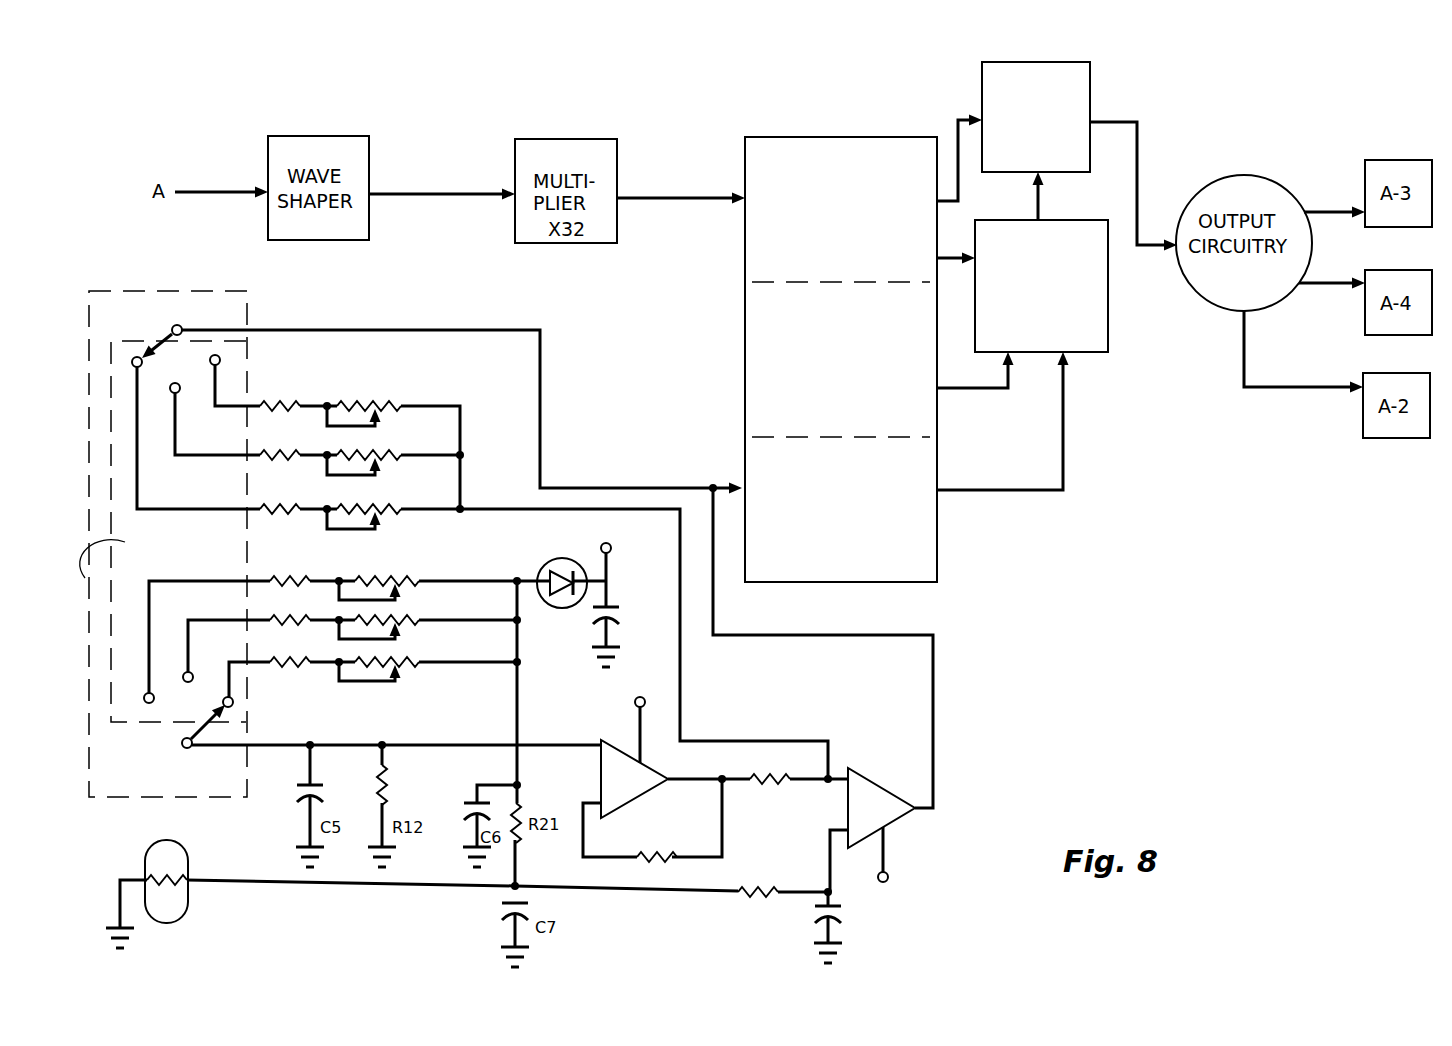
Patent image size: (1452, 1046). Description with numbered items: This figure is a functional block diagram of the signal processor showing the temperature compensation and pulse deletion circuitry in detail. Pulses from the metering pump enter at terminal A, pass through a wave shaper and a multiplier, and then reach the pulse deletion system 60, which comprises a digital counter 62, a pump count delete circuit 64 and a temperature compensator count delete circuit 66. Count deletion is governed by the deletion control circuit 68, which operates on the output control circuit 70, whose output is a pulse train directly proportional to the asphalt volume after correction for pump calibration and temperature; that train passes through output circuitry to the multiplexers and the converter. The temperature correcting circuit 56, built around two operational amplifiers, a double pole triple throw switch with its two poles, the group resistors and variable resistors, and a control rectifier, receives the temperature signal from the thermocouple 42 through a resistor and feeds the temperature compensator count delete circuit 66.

The thermocouple 42 is at (147, 831).
The temperature correcting circuit 56 is at (154, 270).
The pulse deletion system 60 is at (920, 601).
The digital counter 62 is at (793, 135).
The pump count delete circuit 64 is at (749, 346).
The temperature compensator count delete circuit 66 is at (763, 582).
The deletion control circuit 68 is at (1103, 322).
The output control circuit 70 is at (1087, 80).